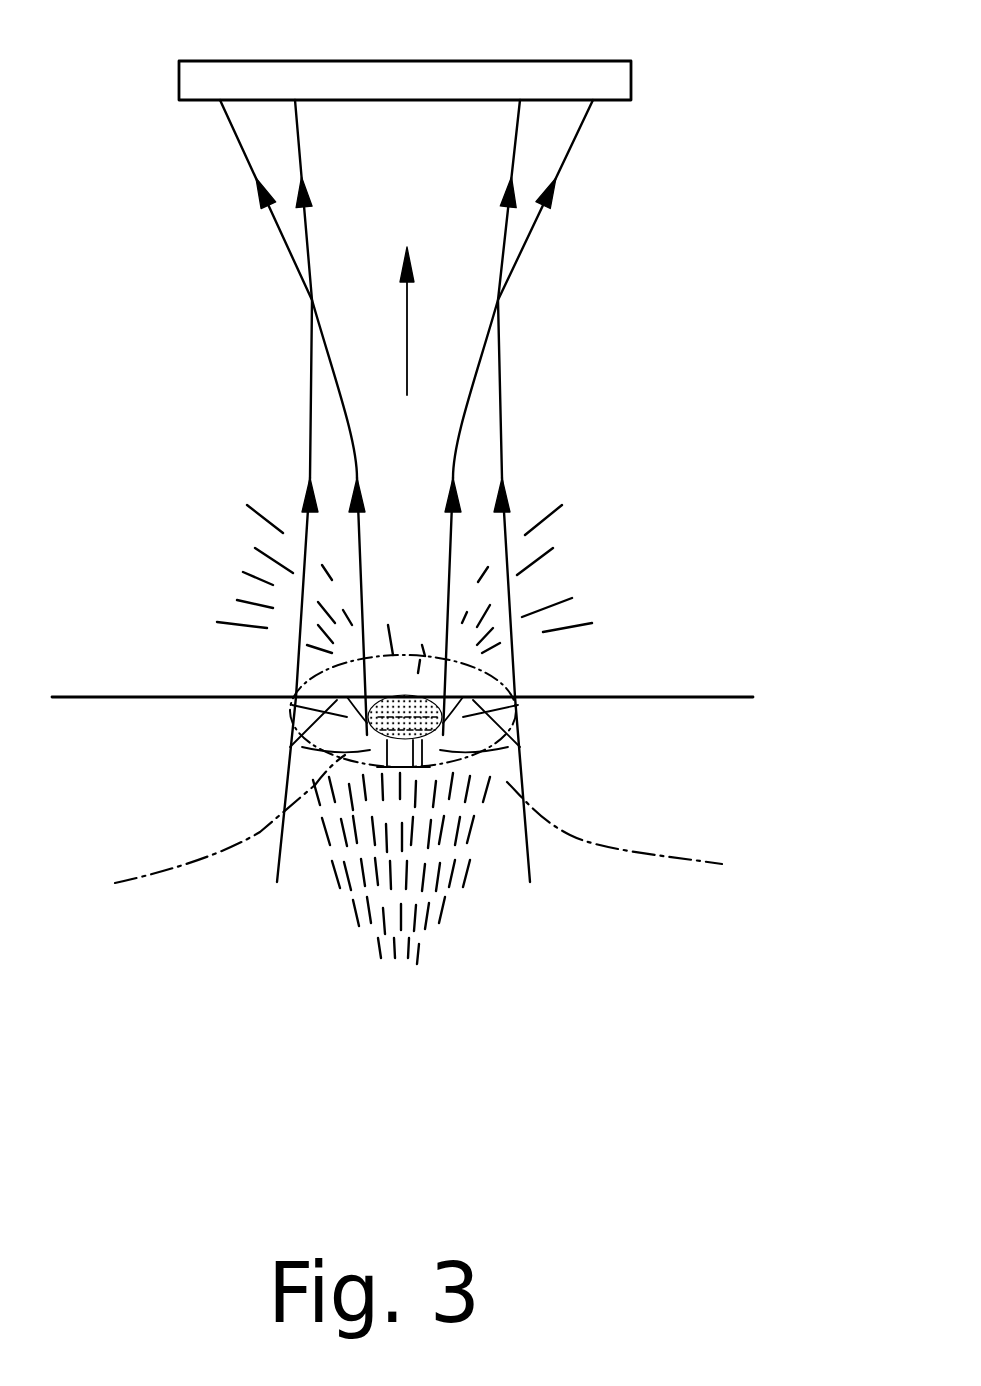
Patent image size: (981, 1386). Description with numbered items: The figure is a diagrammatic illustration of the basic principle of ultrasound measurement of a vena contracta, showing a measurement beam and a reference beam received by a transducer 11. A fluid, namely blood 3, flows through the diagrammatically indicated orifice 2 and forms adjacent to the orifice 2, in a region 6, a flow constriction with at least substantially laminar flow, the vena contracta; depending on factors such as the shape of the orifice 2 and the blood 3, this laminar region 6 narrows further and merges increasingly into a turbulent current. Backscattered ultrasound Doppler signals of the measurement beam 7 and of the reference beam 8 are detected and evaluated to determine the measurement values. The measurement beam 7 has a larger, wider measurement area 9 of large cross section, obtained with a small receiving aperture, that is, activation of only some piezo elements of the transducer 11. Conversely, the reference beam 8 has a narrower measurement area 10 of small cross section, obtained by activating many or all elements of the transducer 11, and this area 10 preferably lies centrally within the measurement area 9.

The transducer 11 is at (618, 85).
The measurement beam 7 is at (312, 381).
The reference beam 8 is at (525, 247).
The orifice 2 is at (323, 723).
The blood 3 is at (283, 615).
The measurement area 9 is at (520, 728).
The region 6 is at (643, 837).
The measurement area 10 is at (196, 835).